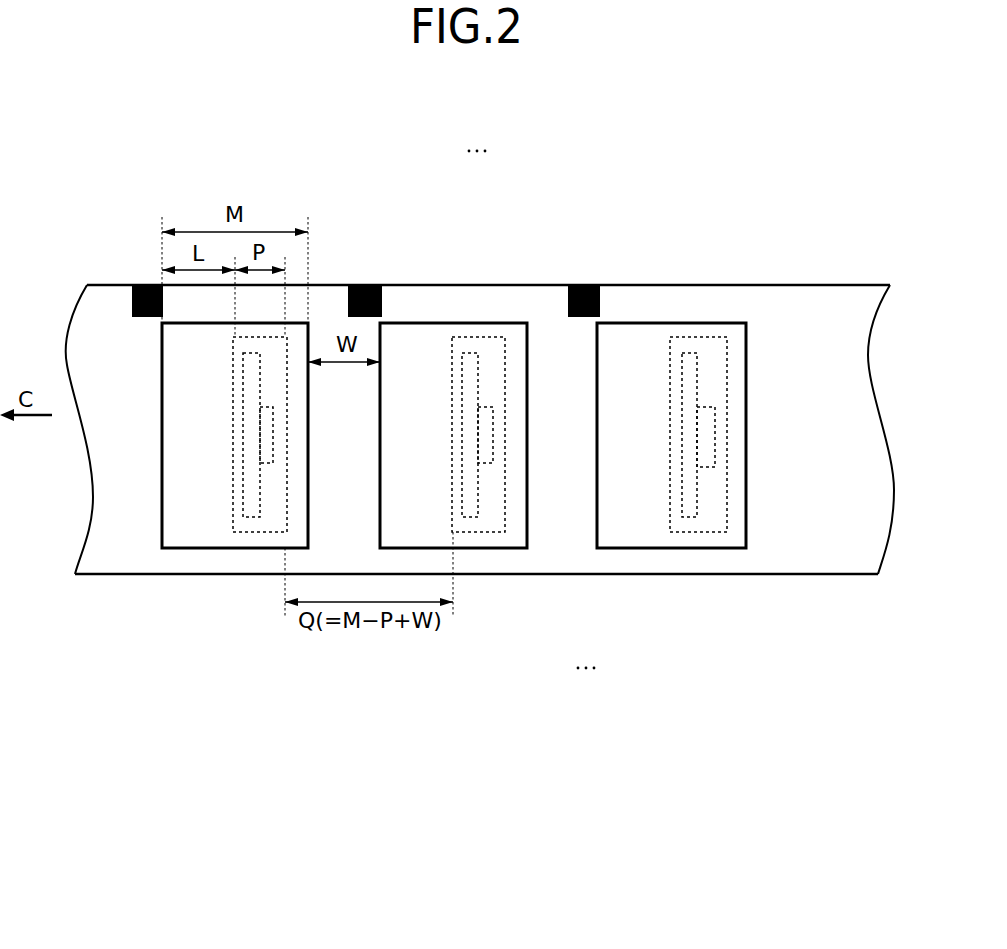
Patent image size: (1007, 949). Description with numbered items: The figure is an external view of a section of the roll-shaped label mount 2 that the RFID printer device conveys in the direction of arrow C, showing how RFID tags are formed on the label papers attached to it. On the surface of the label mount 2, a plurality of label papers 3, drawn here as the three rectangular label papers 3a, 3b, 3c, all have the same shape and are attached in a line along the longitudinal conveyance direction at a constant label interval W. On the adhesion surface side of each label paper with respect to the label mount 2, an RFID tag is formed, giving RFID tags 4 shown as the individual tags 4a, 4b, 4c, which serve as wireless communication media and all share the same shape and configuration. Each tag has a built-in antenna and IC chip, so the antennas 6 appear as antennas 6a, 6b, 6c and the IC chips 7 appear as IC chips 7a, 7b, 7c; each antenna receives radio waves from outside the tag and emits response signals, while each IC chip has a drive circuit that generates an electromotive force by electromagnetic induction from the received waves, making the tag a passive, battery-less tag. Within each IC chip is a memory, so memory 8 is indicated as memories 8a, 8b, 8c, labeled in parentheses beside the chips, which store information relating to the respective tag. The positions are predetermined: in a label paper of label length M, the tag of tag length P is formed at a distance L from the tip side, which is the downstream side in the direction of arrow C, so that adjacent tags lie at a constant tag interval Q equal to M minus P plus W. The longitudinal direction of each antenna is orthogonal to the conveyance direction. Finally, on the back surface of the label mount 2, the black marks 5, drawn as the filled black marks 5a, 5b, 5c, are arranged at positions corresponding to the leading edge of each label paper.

The label mount 2 is at (798, 285).
The label papers 3 is at (469, 553).
The label paper 3a is at (195, 548).
The label paper 3b is at (503, 548).
The label paper 3c is at (720, 548).
The RFID tags 4 is at (467, 541).
The RFID tag 4a is at (263, 532).
The RFID tag 4b is at (478, 532).
The RFID tag 4c is at (607, 517).
The black marks 5 is at (362, 203).
The black mark 5a is at (147, 283).
The black mark 5b is at (363, 283).
The black mark 5c is at (502, 229).
The antennas 6 is at (541, 560).
The antenna 6a is at (233, 373).
The antenna 6b is at (452, 373).
The antenna 6c is at (670, 373).
The IC chips 7 is at (534, 668).
The IC chip 7a is at (316, 446).
The IC chip 7b is at (534, 446).
The IC chip 7c is at (752, 444).
The memory 8 is at (872, 863).
The memory 8a is at (273, 437).
The memory 8b is at (493, 437).
The memory 8c is at (715, 437).